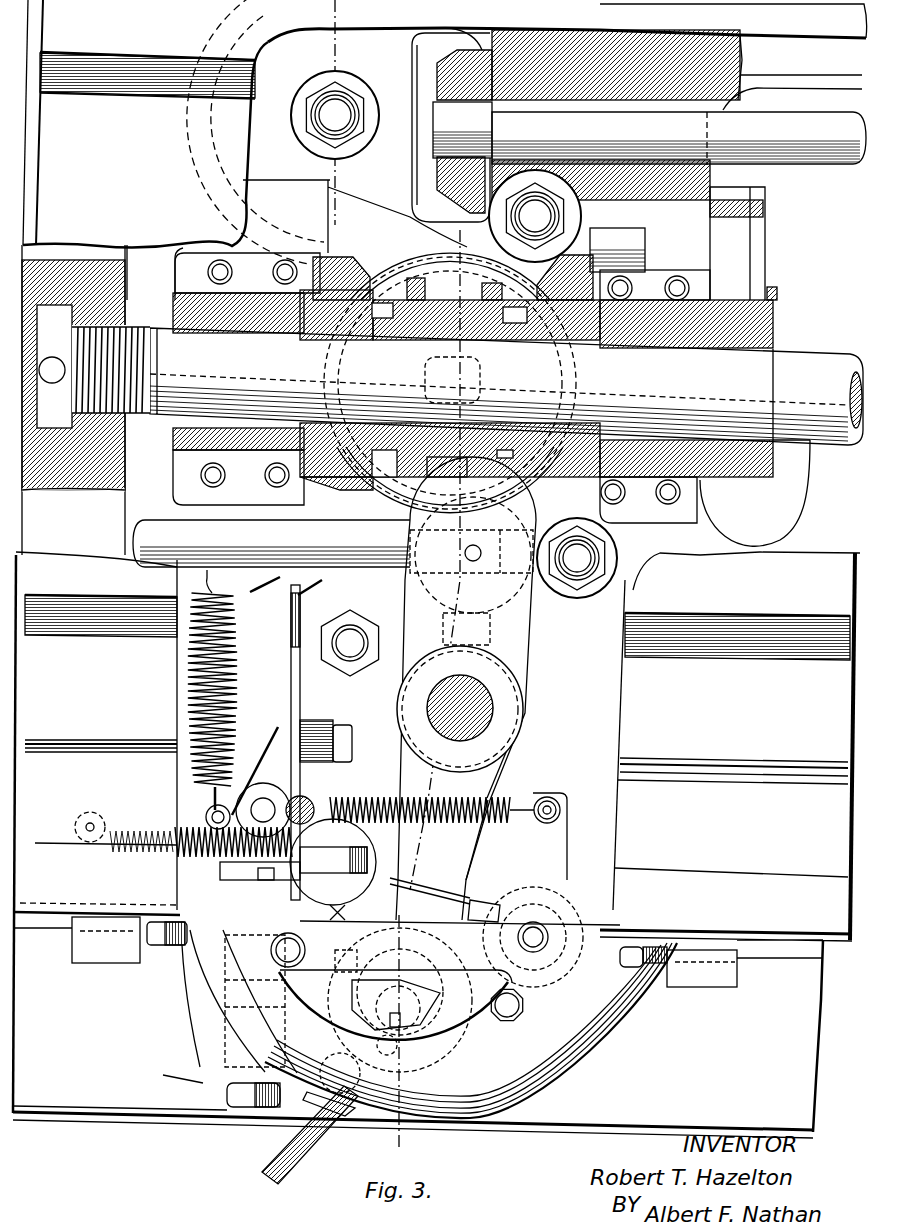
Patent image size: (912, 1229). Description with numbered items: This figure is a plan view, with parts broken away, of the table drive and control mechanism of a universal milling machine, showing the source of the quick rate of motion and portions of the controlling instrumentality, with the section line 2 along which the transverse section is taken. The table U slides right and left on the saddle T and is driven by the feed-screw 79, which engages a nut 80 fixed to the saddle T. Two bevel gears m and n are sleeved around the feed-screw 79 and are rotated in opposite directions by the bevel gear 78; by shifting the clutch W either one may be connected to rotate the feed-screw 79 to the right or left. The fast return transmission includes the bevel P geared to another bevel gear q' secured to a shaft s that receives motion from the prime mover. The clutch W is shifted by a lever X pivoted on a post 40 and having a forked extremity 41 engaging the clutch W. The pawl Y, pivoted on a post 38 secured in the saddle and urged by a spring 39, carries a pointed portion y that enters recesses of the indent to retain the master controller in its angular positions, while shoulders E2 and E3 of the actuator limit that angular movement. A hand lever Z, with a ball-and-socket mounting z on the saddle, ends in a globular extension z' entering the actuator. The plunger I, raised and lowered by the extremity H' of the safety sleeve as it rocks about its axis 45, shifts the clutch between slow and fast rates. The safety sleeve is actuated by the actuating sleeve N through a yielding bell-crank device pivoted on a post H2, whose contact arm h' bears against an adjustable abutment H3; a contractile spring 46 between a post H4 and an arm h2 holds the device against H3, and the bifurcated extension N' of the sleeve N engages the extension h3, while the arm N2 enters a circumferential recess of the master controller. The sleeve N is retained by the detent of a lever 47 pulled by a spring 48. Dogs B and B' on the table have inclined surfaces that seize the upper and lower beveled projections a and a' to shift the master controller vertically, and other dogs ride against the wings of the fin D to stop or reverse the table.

The table U is at (145, 124).
The bevel gear P is at (278, 132).
The bevel gear q' is at (439, 127).
The shaft s is at (649, 135).
The saddle T is at (155, 272).
The bevel gear m is at (341, 263).
The clutch W is at (450, 383).
The bevel gear n is at (549, 220).
The feed-screw 79 is at (506, 386).
The nut 80 is at (93, 366).
The forked extremity 41 is at (447, 480).
The bevel gear 78 is at (345, 500).
The plunger I is at (271, 566).
The post H4 is at (172, 582).
The extremity of safety sleeve H' is at (349, 628).
The clutch-shifting lever X is at (477, 688).
The post 40 is at (460, 709).
The contractile spring 46 is at (228, 701).
The arm h2 is at (206, 808).
The post H2 is at (263, 797).
The contact arm h' is at (255, 766).
The adjustable abutment H3 is at (332, 728).
The spring 39 is at (426, 825).
The lever 47 is at (333, 862).
The spring 48 is at (183, 848).
The actuating sleeve N is at (245, 888).
The bifurcated extension N' is at (257, 892).
The pointed portion y is at (430, 875).
The pawl Y is at (486, 849).
The shoulder E3 is at (352, 933).
The shoulder E2 is at (484, 908).
The post 38 is at (545, 937).
The dog B' is at (702, 943).
The extension h3 is at (183, 937).
The dog B is at (106, 957).
The upper beveled projection a is at (396, 984).
The vane or fin D is at (393, 1000).
The lower beveled projection a' is at (492, 998).
The arm N2 is at (270, 1001).
The globular extension z' is at (396, 1050).
The ball-and-socket mounting z is at (353, 1074).
The axis 45 is at (253, 1113).
The section line 2 is at (395, 1040).
The hand lever Z is at (293, 1145).